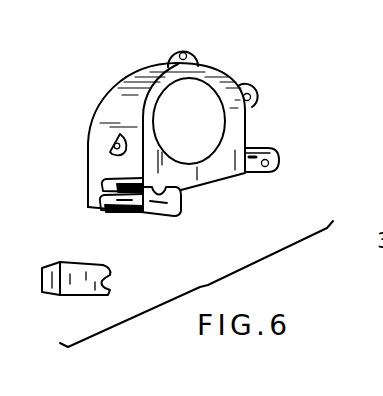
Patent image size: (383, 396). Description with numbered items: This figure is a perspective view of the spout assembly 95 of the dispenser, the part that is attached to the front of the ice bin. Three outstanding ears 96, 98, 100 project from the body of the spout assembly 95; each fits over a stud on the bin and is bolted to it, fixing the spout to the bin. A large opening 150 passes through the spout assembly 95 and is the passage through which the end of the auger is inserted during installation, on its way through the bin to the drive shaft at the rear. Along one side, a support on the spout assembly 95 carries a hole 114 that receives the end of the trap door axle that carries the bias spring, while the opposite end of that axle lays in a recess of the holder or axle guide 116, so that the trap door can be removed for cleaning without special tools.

The spout assembly 95 is at (119, 75).
The outstanding ear 96 is at (110, 152).
The outstanding ear 98 is at (195, 56).
The outstanding ear 100 is at (257, 102).
The hole 114 is at (274, 169).
The axle guide 116 is at (182, 215).
The opening 150 is at (243, 113).